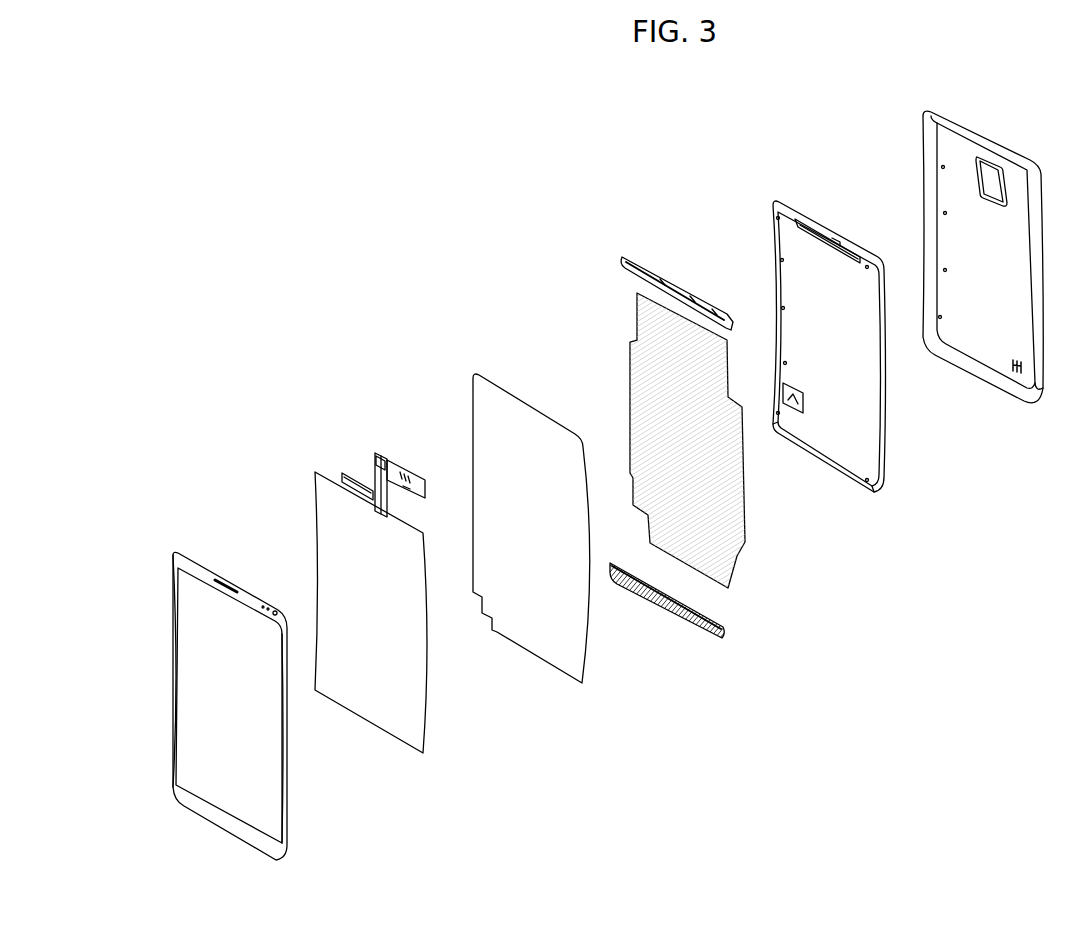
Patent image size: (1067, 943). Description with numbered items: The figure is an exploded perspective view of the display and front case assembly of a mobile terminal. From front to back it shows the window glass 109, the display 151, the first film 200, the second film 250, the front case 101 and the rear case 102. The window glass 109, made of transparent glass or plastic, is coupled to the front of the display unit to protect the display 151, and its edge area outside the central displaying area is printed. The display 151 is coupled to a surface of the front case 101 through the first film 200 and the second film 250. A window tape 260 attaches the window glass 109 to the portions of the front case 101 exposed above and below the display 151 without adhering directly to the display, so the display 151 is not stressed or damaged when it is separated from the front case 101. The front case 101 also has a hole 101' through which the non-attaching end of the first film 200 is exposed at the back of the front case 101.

The window glass 109 is at (205, 572).
The display 151 is at (328, 478).
The first film 200 is at (492, 393).
The second film 250 is at (622, 318).
The window tape 260 is at (627, 255).
The front case 101 is at (829, 315).
The hole 101' is at (802, 440).
The rear case 102 is at (965, 127).